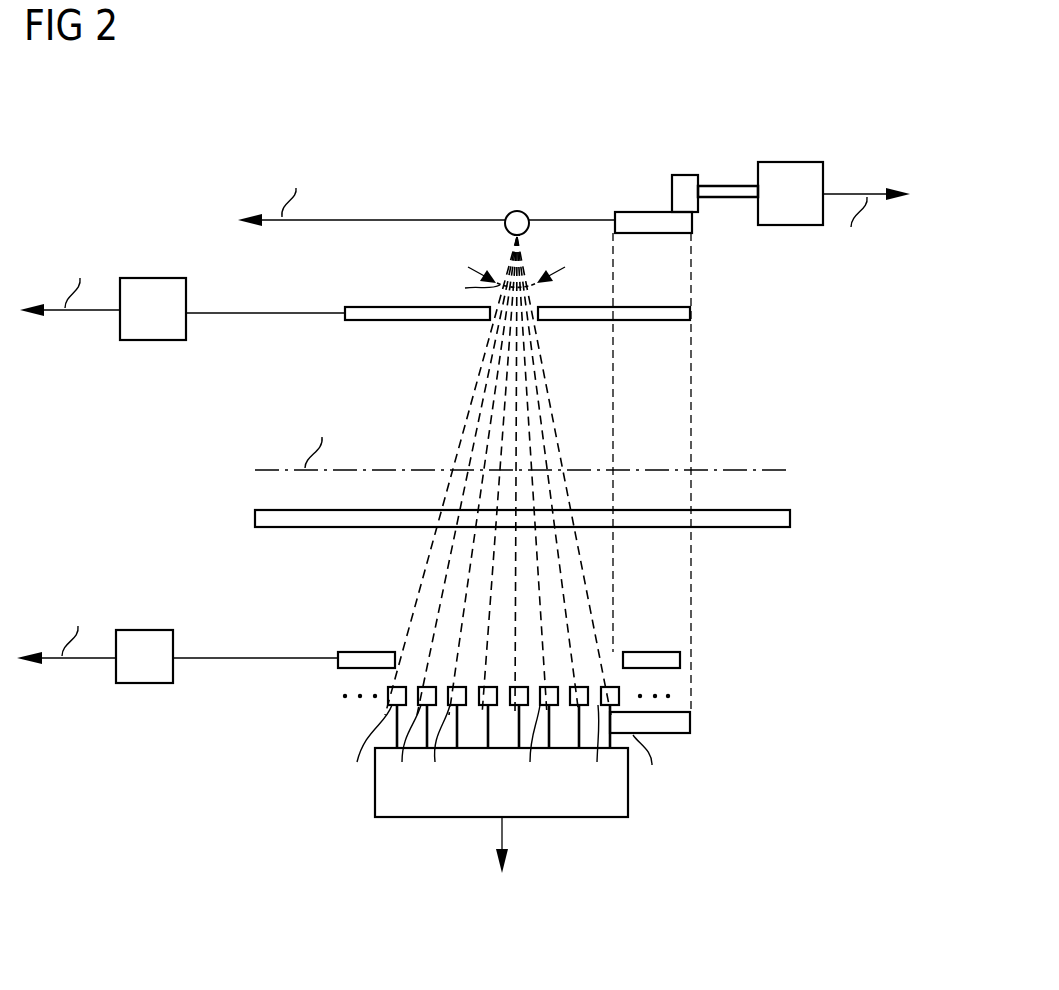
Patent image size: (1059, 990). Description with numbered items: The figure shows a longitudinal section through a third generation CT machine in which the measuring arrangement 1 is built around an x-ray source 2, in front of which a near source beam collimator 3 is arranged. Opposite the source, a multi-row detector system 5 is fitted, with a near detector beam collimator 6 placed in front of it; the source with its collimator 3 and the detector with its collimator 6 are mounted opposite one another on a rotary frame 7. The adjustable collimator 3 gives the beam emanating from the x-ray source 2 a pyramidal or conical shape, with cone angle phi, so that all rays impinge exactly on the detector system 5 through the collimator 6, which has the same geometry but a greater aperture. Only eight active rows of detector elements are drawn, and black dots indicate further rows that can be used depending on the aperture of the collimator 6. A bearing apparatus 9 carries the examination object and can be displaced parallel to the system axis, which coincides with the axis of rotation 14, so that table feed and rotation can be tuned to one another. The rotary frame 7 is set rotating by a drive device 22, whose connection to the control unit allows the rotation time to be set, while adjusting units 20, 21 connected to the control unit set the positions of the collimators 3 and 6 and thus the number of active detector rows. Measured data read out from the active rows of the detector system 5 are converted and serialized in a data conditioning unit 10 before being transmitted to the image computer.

The measuring arrangement 1 is at (684, 110).
The x-ray source 2 is at (515, 212).
The near source beam collimator 3 is at (380, 308).
The detector system 5 is at (735, 620).
The near detector beam collimator 6 is at (365, 652).
The rotary frame 7 is at (648, 215).
The bearing apparatus 9 is at (293, 530).
The data conditioning unit 10 is at (572, 818).
The axis of rotation 14 is at (740, 470).
The adjusting units 20 is at (152, 343).
The detector collimator drive 21 is at (145, 686).
The drive device 22 is at (790, 176).